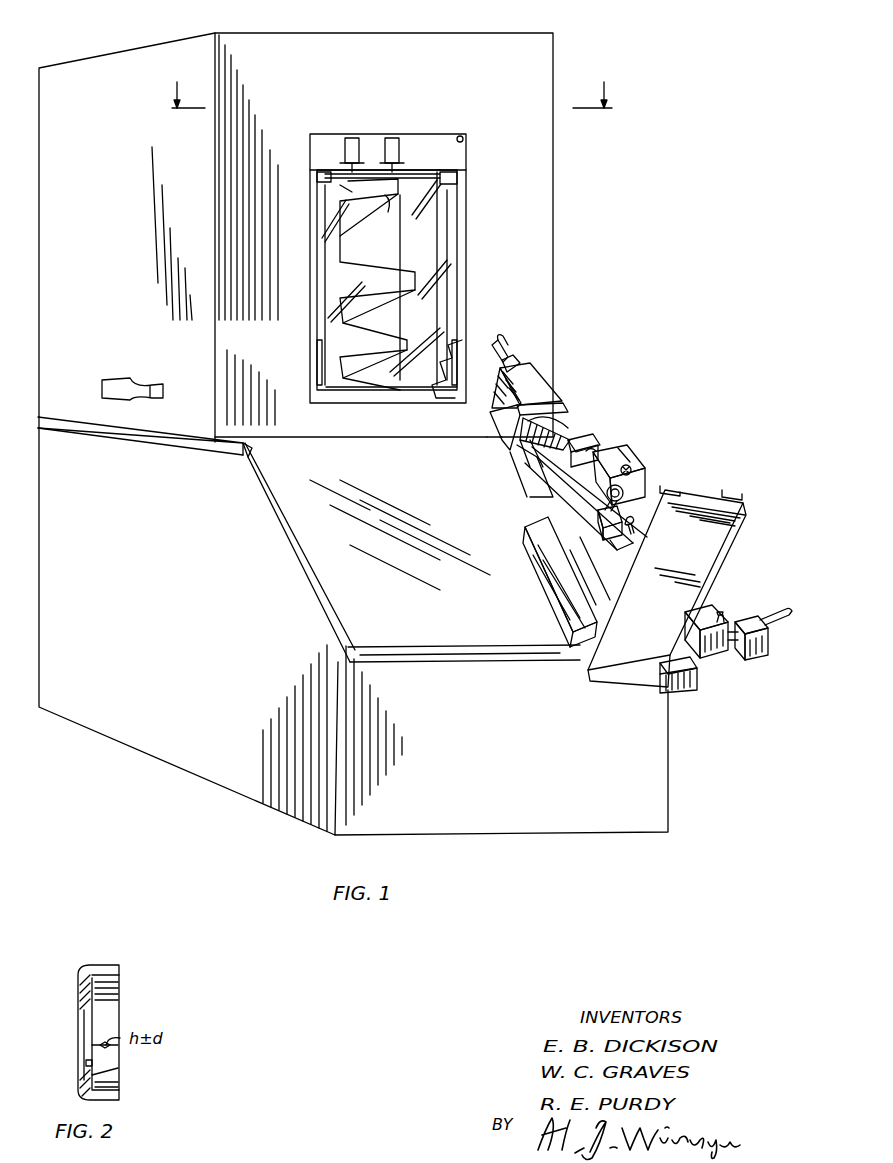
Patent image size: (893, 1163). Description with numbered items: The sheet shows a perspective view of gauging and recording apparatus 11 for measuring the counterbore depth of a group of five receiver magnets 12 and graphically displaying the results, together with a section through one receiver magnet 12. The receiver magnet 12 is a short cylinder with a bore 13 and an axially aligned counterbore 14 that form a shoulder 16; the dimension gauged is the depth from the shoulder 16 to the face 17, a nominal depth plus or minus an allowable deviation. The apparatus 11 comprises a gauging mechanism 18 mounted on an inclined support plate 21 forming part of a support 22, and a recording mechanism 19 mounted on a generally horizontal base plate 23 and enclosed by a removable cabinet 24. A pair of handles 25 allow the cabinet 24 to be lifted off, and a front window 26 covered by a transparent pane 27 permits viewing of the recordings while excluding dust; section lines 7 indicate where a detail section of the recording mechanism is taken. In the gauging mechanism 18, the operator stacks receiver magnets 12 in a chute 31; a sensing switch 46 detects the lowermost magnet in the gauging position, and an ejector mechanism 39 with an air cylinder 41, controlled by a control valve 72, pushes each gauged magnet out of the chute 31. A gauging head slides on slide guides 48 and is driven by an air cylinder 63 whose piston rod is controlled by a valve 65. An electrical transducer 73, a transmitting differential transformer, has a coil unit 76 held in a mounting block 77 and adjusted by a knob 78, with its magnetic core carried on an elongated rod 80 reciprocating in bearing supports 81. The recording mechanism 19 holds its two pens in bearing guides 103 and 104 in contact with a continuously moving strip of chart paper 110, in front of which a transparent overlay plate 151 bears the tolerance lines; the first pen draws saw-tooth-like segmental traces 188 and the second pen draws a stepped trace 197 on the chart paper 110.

In FIG. 1, the section line 7- 7 is at (391, 86).
In FIG. 1, the gauging and recording apparatus 11 is at (612, 226).
In FIG. 1, the gauging mechanism 18 is at (517, 508).
In FIG. 1, the recording mechanism 19 is at (412, 128).
In FIG. 1, the inclined support plate 21 is at (298, 572).
In FIG. 1, the support 22 is at (112, 735).
In FIG. 1, the base plate 23 is at (232, 460).
In FIG. 1, the cabinet 24 is at (553, 287).
In FIG. 1, the handle 25 is at (155, 400).
In FIG. 1, the window 26 is at (463, 139).
In FIG. 1, the transparent pane 27 is at (451, 400).
In FIG. 1, the chute 31 is at (735, 527).
In FIG. 1, the ejector mechanism 39 is at (721, 612).
In FIG. 1, the air cylinder 41 is at (720, 655).
In FIG. 1, the sensing switch 46 is at (683, 693).
In FIG. 1, the slide guide 48 is at (550, 582).
In FIG. 1, the air cylinder 63 is at (566, 420).
In FIG. 1, the valve 65 is at (545, 382).
In FIG. 1, the control valve 72 is at (742, 650).
In FIG. 1, the electrical transducer 73 is at (646, 476).
In FIG. 1, the coil unit 76 is at (611, 500).
In FIG. 1, the mounting block 77 is at (622, 461).
In FIG. 1, the knob 78 is at (630, 468).
In FIG. 1, the elongated rod 80 is at (596, 452).
In FIG. 1, the bearing support 81 is at (594, 437).
In FIG. 1, the bearing guide 103 is at (402, 152).
In FIG. 1, the bearing guide 104 is at (346, 158).
In FIG. 1, the chart paper 110 is at (458, 272).
In FIG. 1, the transparent overlay plate 151 is at (447, 237).
In FIG. 1, the saw-tooth-like segmental trace 188 is at (372, 212).
In FIG. 1, the stepped trace 197 is at (366, 186).
In FIG. 2, the receiver magnet 12 is at (104, 965).
In FIG. 2, the bore 13 is at (84, 1063).
In FIG. 2, the counterbore 14 is at (112, 1086).
In FIG. 2, the shoulder 16 is at (118, 1070).
In FIG. 2, the face 17 is at (119, 970).